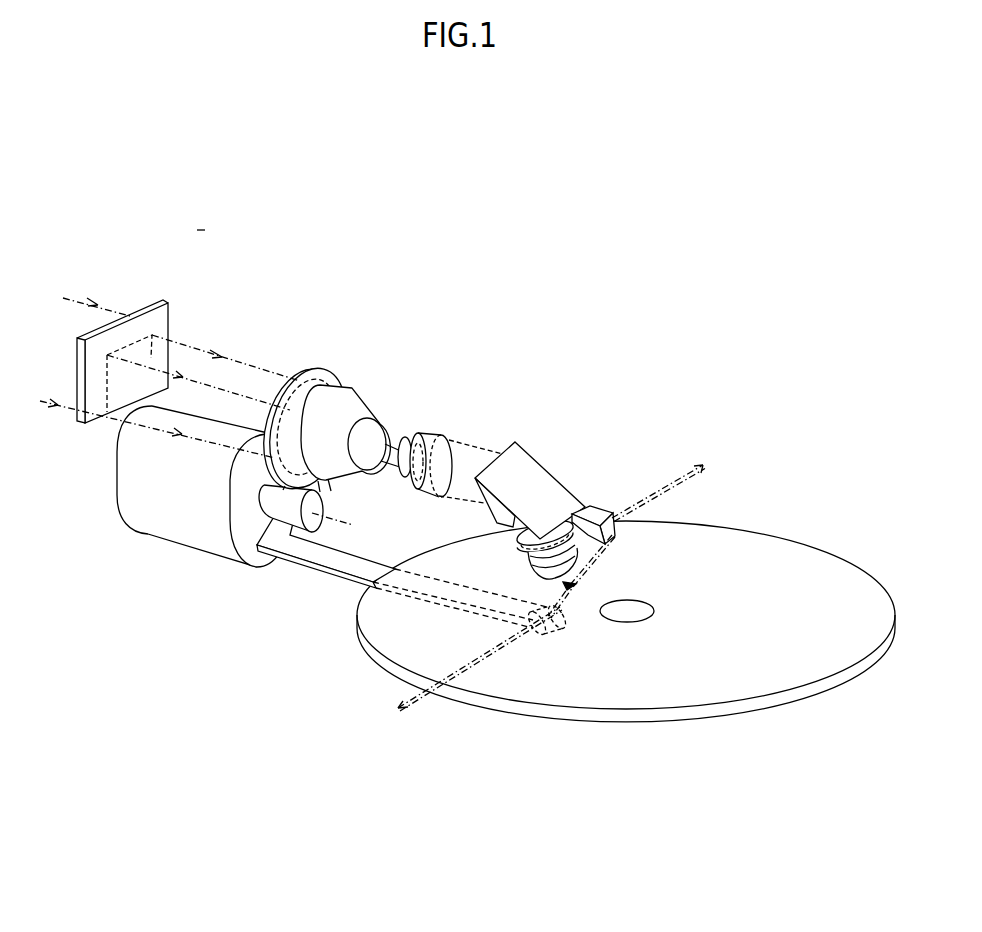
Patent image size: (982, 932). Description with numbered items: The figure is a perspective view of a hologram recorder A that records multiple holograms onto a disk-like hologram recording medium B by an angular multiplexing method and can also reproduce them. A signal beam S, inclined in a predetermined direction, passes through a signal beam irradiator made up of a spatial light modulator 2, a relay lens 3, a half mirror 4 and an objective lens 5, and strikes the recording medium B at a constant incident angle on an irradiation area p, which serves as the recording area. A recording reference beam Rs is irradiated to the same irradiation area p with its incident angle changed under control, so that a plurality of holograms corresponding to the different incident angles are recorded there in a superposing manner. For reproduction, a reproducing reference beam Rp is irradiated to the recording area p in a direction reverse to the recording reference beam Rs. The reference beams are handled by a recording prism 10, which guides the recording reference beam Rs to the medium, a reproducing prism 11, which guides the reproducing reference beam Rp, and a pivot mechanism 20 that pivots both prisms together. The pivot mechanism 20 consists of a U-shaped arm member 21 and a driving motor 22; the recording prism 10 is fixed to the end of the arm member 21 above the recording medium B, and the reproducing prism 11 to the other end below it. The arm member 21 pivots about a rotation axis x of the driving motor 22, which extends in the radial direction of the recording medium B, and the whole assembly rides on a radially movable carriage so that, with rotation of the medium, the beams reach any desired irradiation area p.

The spatial light modulator 2 is at (168, 304).
The signal beam S is at (247, 363).
The relay lens 3 is at (420, 433).
The hologram recorder A is at (483, 366).
The half mirror 4 is at (543, 470).
The recording reference beam Rs is at (653, 487).
The recording prism 10 is at (613, 523).
The hologram recording medium B is at (748, 532).
The driving motor 22 is at (150, 537).
The arm member 21 is at (300, 560).
The objective lens 5 is at (530, 562).
The pivot mechanism 20 is at (233, 614).
The rotation axis x is at (338, 515).
The irradiation area p is at (571, 587).
The reproducing prism 11 is at (553, 578).
The reproducing reference beam Rp is at (422, 703).